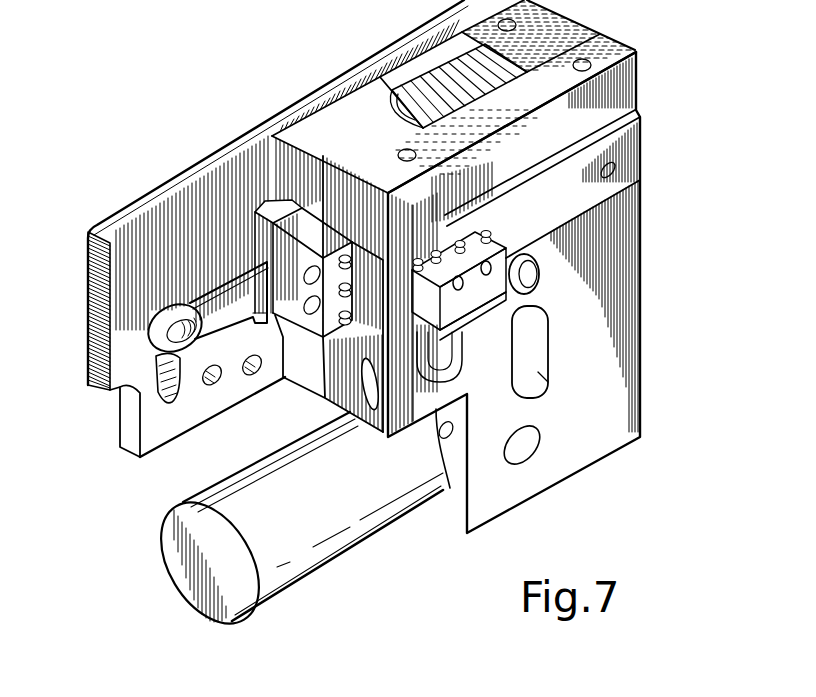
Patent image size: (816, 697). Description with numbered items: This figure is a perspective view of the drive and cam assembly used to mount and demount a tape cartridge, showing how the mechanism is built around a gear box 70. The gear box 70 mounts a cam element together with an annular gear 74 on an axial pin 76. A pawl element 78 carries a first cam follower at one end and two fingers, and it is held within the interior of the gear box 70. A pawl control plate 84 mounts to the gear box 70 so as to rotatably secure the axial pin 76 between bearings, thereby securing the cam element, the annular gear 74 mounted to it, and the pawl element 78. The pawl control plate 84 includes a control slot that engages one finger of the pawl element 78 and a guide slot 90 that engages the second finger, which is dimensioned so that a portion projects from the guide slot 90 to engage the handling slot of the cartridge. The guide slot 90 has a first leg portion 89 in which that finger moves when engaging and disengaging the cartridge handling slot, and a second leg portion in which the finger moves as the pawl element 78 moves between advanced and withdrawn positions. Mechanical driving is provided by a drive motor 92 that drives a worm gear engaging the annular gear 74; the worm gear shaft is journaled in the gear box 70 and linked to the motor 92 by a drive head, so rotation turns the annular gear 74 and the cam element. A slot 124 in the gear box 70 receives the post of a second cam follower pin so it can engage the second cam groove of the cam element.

The gear box 70 is at (612, 363).
The annular gear 74 is at (561, 20).
The axial pin 76 is at (541, 268).
The pawl element 78 is at (195, 304).
The pawl control plate 84 is at (197, 175).
The first leg portion 89 is at (178, 382).
The guide slot 90 is at (228, 248).
The drive motor 92 is at (292, 561).
The slot 124 is at (546, 383).